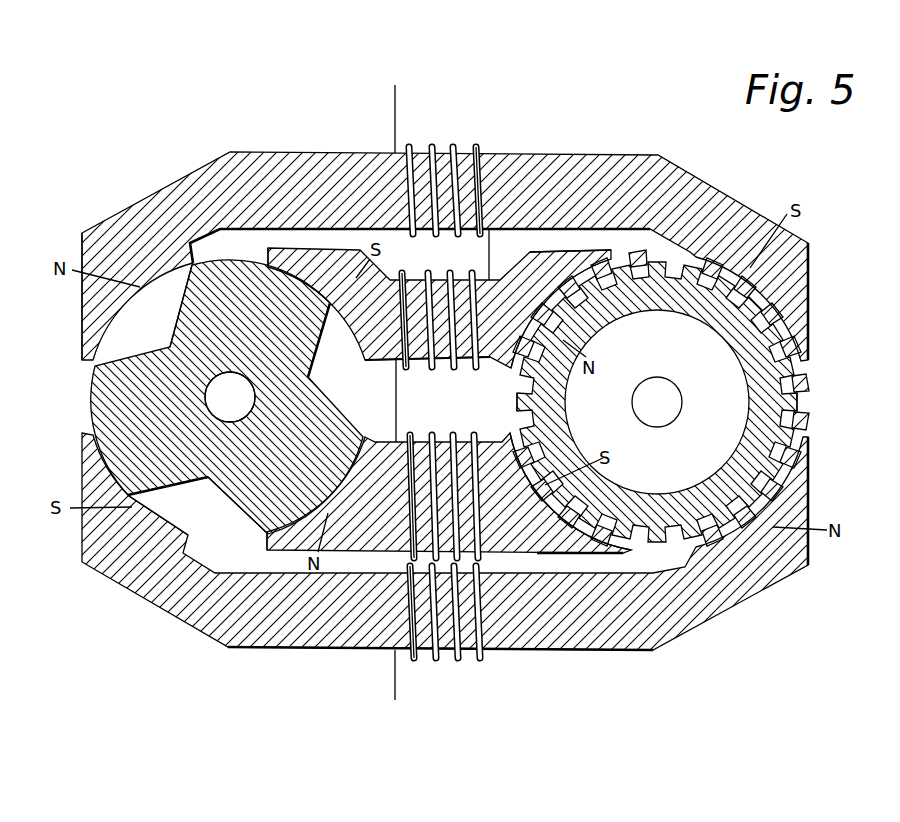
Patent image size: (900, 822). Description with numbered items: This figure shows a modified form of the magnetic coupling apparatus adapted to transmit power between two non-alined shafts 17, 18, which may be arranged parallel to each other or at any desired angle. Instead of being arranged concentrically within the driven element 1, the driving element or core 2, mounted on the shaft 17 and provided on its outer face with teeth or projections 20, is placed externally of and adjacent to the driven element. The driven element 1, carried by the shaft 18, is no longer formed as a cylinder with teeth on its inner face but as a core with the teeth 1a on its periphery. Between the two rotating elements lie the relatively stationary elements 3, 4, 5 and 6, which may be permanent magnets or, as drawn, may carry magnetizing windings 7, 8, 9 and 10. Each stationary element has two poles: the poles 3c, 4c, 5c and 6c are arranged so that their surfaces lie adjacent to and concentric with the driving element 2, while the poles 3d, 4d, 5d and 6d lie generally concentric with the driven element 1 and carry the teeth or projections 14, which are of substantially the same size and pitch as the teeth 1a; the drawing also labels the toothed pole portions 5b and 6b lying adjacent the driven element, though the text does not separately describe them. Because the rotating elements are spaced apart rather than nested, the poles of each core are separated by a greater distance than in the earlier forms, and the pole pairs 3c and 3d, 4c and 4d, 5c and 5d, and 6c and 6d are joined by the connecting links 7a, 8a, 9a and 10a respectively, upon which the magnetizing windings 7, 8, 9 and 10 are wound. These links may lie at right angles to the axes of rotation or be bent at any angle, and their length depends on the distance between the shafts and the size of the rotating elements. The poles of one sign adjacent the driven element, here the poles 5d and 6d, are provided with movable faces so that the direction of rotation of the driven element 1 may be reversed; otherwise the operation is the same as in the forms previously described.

The driven element 1 is at (580, 348).
The teeth 1a is at (515, 398).
The driving element 2 is at (215, 328).
The stationary element 3 is at (348, 161).
The pole 3c is at (110, 318).
The pole 3d is at (800, 290).
The stationary element 4 is at (466, 445).
The pole 4c is at (366, 467).
The pole 4d is at (600, 538).
The stationary element 5 is at (506, 300).
The pole piece teeth 5b is at (540, 290).
The pole 5c is at (330, 270).
The pole 5d is at (632, 256).
The stationary element 6 is at (262, 593).
The yoke pole portion 6b is at (809, 447).
The pole 6c is at (150, 512).
The pole 6d is at (806, 492).
The magnetizing winding 7 is at (472, 151).
The connecting link 7a is at (518, 168).
The magnetizing winding 8 is at (446, 445).
The connecting link 8a is at (418, 440).
The magnetizing winding 9 is at (447, 292).
The connecting link 9a is at (412, 292).
The magnetizing winding 10 is at (441, 575).
The connecting link 10a is at (387, 593).
The teeth 14 is at (568, 278).
The shaft 17 is at (230, 397).
The shaft 18 is at (657, 402).
The teeth 20 is at (129, 363).